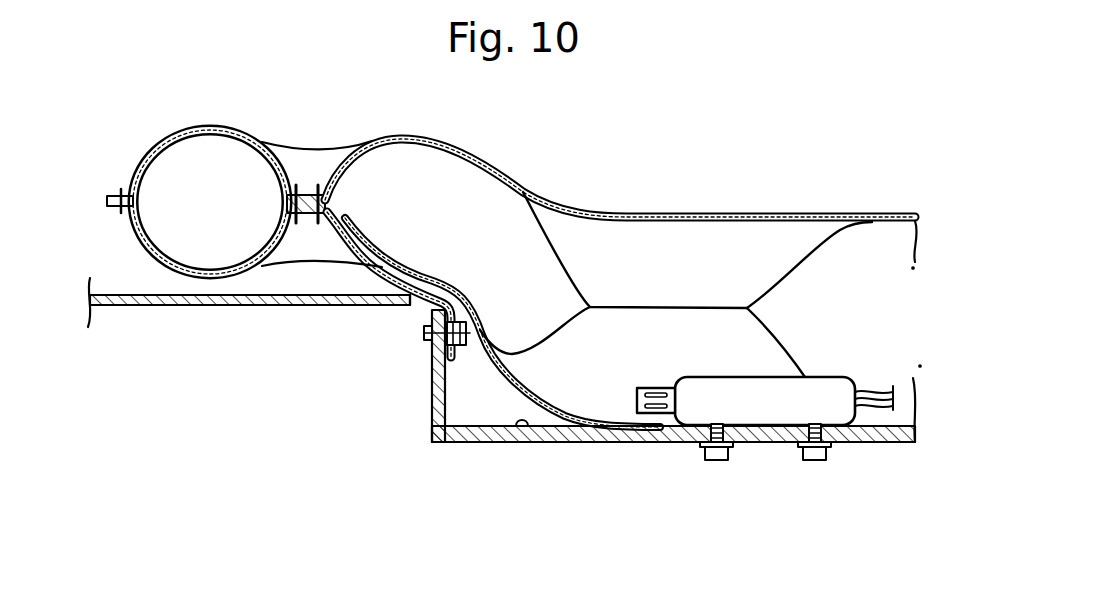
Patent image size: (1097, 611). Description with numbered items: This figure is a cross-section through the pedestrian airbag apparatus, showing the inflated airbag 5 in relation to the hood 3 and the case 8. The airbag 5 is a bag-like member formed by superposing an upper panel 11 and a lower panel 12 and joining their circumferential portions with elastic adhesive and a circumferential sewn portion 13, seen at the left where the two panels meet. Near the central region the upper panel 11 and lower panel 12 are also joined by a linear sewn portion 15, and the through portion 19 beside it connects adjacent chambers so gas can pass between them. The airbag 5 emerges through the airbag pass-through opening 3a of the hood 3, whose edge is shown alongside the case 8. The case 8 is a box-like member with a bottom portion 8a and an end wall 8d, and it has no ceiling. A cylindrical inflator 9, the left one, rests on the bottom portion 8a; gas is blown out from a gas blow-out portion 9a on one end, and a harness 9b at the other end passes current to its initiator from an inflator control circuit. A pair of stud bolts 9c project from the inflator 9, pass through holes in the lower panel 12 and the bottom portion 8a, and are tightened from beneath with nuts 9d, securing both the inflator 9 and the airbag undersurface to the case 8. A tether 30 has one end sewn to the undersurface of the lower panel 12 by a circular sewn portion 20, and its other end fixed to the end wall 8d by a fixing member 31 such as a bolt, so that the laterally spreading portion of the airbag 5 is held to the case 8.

The hood 3 is at (165, 306).
The airbag pass-through opening 3a is at (407, 306).
The airbag 5 is at (746, 183).
The case 8 is at (640, 428).
The bottom portion 8a is at (518, 430).
The end wall 8d is at (432, 402).
The inflator 9 is at (766, 445).
The gas blow-out portion 9a is at (656, 386).
The harness 9b is at (888, 390).
The stud bolt 9c is at (717, 466).
The nut 9d is at (700, 452).
The upper panel 11 is at (434, 144).
The lower panel 12 is at (440, 278).
The circumferential sewn portion 13 is at (124, 196).
The linear sewn portion 15 is at (680, 304).
The through portion 19 is at (882, 294).
The circular sewn portion 20 is at (310, 195).
The tether 30 is at (347, 256).
The fixing member 31 is at (424, 336).